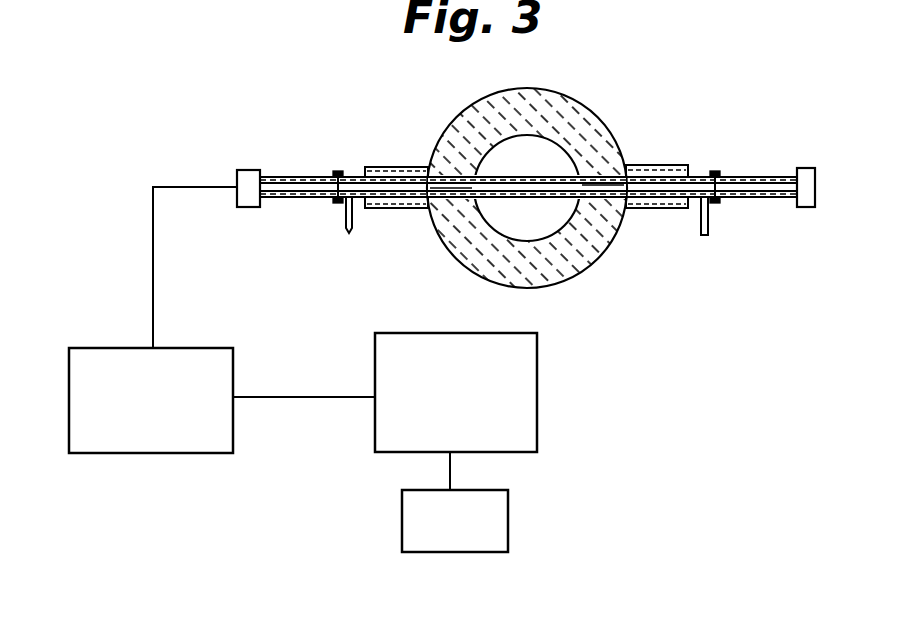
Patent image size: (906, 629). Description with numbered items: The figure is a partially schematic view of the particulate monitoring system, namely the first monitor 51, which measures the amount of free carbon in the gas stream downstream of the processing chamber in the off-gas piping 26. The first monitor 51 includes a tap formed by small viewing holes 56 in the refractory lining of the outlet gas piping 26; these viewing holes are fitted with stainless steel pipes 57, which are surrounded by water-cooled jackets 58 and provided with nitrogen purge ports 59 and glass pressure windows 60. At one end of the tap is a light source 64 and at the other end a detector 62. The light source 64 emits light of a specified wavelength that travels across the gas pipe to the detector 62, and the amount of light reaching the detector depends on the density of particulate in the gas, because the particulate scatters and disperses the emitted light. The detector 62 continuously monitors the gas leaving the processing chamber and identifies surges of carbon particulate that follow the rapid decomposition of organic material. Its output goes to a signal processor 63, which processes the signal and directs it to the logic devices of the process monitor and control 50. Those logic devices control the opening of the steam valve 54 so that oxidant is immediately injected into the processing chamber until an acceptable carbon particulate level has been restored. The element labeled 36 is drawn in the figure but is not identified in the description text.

The off-gas piping 26 is at (615, 75).
The opening in pipe wall 36 is at (608, 185).
The process monitor and control 50 is at (537, 367).
The first monitor 51 is at (502, 184).
The steam valve 54 is at (508, 515).
The viewing holes 56 is at (443, 188).
The stainless steel pipes 57 is at (275, 177).
The water-cooled jackets 58 is at (403, 167).
The nitrogen purge ports 59 is at (348, 232).
The glass pressure windows 60 is at (335, 201).
The detector 62 is at (240, 172).
The signal processor 63 is at (102, 348).
The light source 64 is at (845, 125).